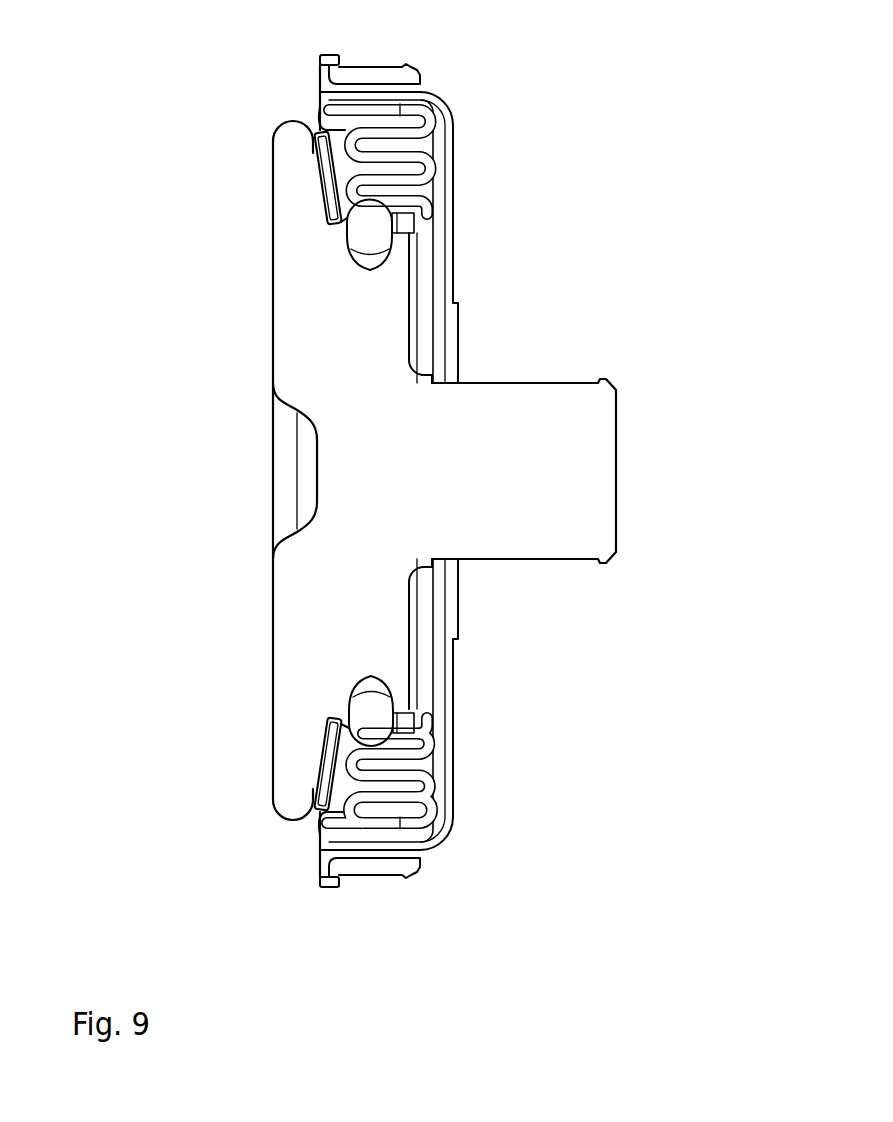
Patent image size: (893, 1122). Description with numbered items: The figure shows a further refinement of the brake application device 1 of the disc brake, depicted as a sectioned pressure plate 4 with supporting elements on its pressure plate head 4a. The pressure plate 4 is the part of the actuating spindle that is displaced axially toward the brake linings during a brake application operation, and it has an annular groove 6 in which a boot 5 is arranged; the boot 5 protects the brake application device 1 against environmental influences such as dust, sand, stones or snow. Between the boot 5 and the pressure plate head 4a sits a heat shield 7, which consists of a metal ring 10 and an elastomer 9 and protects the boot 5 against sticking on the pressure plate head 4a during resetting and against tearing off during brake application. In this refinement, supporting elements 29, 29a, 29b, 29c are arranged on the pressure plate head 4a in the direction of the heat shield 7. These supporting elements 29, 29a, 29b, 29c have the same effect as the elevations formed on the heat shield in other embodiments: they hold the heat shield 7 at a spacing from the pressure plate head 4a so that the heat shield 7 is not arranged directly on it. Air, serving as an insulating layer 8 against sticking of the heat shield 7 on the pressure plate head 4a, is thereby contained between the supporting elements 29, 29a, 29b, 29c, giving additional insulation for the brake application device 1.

The brake application device 1 is at (552, 617).
The pressure plate 4 is at (613, 387).
The pressure plate head 4a is at (273, 384).
The boot 5 is at (397, 232).
The annular groove 6 is at (362, 675).
The heat shield 7 is at (312, 125).
The insulating layer 8 is at (312, 773).
The elastomer 9 is at (353, 793).
The metal ring 10 is at (325, 800).
The supporting element 29 is at (313, 150).
The supporting element 29a is at (327, 194).
The supporting element 29b is at (318, 748).
The supporting element 29c is at (313, 792).